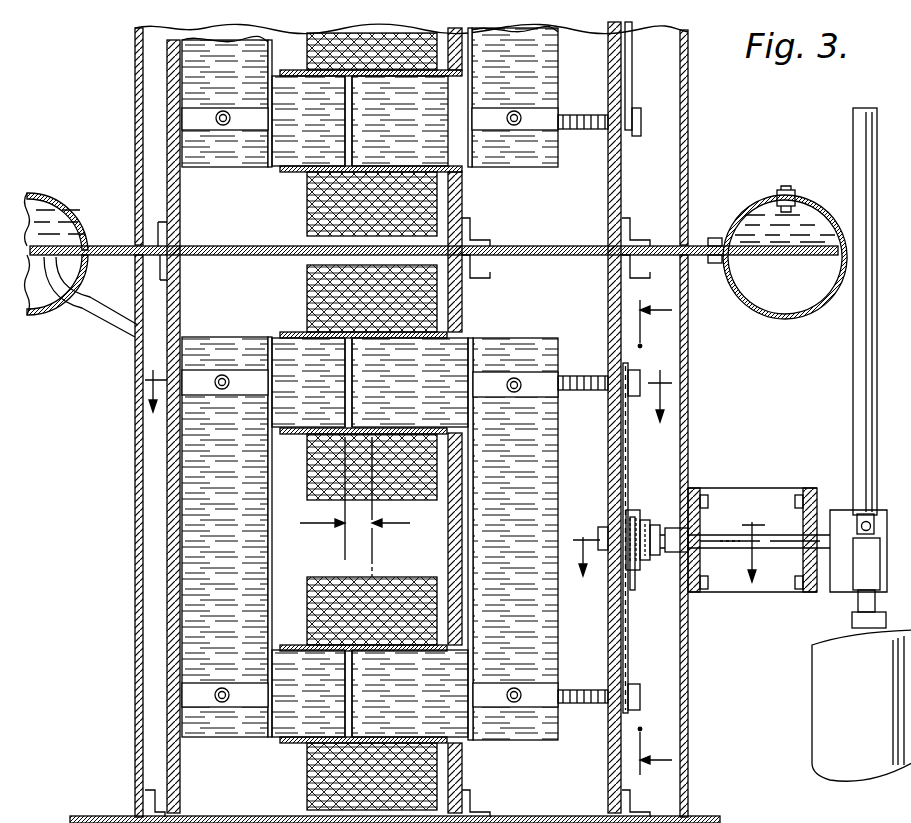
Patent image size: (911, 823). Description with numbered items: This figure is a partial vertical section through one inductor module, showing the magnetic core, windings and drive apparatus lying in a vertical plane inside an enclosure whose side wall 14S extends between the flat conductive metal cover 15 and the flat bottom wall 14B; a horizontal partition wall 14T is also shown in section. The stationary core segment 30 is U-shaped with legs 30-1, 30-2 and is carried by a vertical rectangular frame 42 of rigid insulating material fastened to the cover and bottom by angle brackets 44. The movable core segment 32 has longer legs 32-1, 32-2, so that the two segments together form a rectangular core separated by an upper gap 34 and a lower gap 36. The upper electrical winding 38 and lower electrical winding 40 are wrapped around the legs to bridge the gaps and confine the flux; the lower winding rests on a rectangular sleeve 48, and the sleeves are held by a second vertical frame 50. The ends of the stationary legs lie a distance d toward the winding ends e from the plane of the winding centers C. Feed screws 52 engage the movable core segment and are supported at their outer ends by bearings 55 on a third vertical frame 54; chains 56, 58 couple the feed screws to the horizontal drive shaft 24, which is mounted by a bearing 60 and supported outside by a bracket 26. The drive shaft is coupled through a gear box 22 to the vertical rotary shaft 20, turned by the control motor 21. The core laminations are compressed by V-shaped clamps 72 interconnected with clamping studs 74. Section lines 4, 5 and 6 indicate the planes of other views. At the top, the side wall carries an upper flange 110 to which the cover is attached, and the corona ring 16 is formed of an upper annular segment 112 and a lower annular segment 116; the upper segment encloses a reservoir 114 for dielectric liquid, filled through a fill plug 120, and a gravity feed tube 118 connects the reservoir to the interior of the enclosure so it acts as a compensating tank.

The side wall 14S is at (135, 620).
The housing top plate 14T is at (520, 246).
The bottom wall 14B is at (214, 817).
The conductive metal cover 15 is at (553, 262).
The corona ring 16 is at (780, 243).
The vertical rotary shaft 20 is at (876, 362).
The control motor 21 is at (812, 728).
The gear box 22 is at (848, 582).
The horizontal drive shaft 24 is at (772, 535).
The bracket 26 is at (728, 488).
The stationary core segment 30 is at (198, 337).
The leg of stationary core segment 30-1 is at (290, 420).
The leg of stationary core segment 30-2 is at (318, 742).
The movable core segment 32 is at (512, 372).
The leg of movable core segment 32-1 is at (445, 414).
The leg of movable core segment 32-2 is at (460, 746).
The upper gap 34 is at (345, 358).
The lower gap 36 is at (356, 141).
The upper electrical winding 38 is at (307, 280).
The lower electrical winding 40 is at (320, 577).
The vertical rectangular frame 42 is at (170, 495).
The angle bracket 44 is at (160, 275).
The rectangular sleeve 48 is at (290, 645).
The vertical frame 50 is at (450, 520).
The feed screw 52 is at (584, 392).
The third vertical frame 54 is at (622, 462).
The bearing 55 is at (620, 362).
The chain 56 is at (636, 490).
The chain 58 is at (628, 640).
The bearing 60 is at (658, 572).
The V-shaped clamp 72 is at (210, 114).
The clamping stud 74 is at (240, 372).
The upper flange 110 is at (712, 264).
The upper annular segment 112 is at (745, 212).
The reservoir 114 is at (800, 222).
The lower annular segment 116 is at (802, 318).
The gravity feed tube 118 is at (97, 310).
The fill plug 120 is at (790, 190).
The section line 4 is at (655, 537).
The section line 5 is at (671, 562).
The section line 6 is at (408, 407).
The offset distance d is at (355, 498).
The winding end e is at (307, 468).
The plane of winding centers C is at (376, 566).